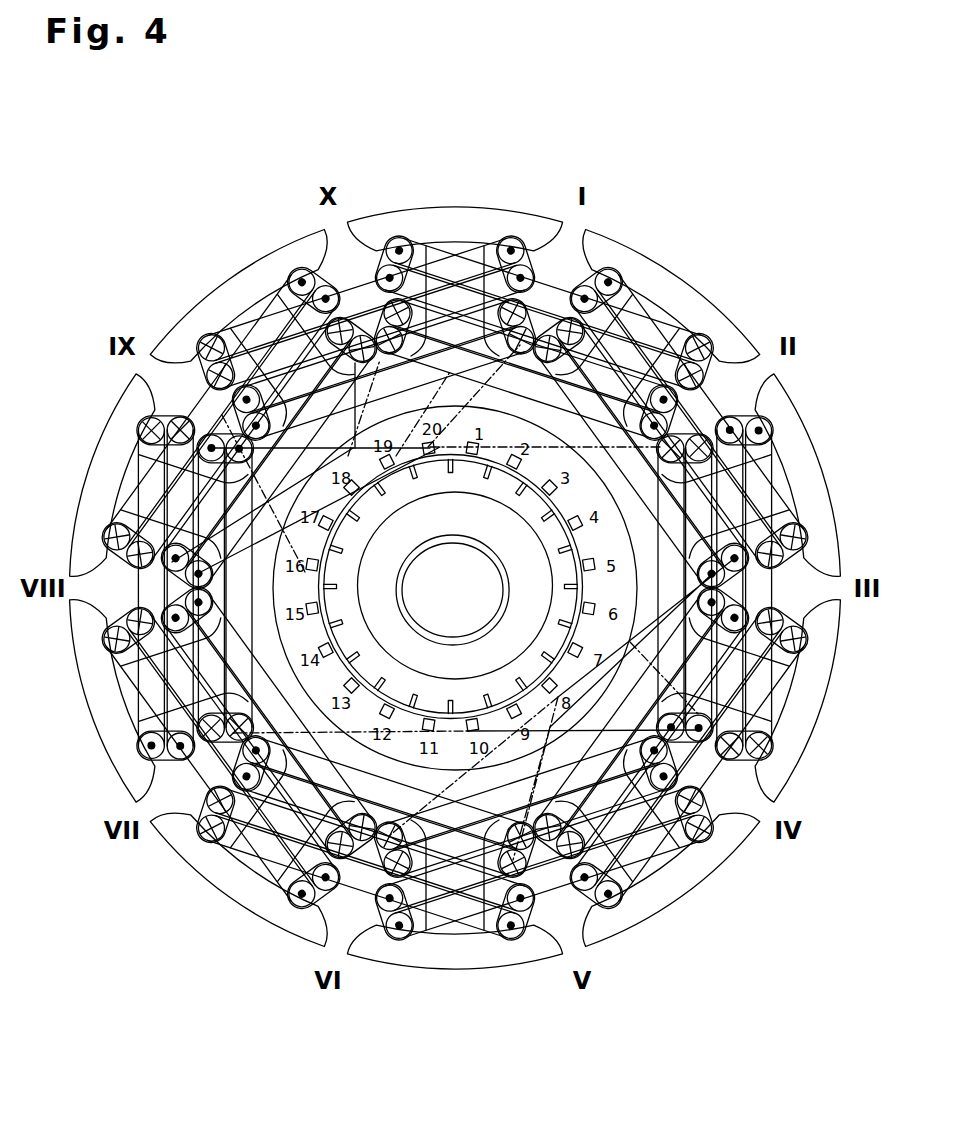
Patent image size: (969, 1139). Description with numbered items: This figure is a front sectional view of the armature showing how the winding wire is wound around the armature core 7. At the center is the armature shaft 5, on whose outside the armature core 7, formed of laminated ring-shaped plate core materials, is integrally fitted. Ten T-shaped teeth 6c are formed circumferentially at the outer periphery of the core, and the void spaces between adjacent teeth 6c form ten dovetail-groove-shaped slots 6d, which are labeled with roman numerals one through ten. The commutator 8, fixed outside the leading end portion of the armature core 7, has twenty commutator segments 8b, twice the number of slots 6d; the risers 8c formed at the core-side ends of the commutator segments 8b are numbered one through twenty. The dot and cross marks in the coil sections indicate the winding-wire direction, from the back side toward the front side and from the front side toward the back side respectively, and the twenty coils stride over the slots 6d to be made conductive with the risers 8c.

The armature shaft 5 is at (464, 622).
The teeth 6c is at (713, 322).
The slots 6d is at (573, 246).
The armature core 7 is at (735, 277).
The commutator 8 is at (538, 616).
The commutator segments 8b is at (285, 595).
The risers 8c is at (277, 537).